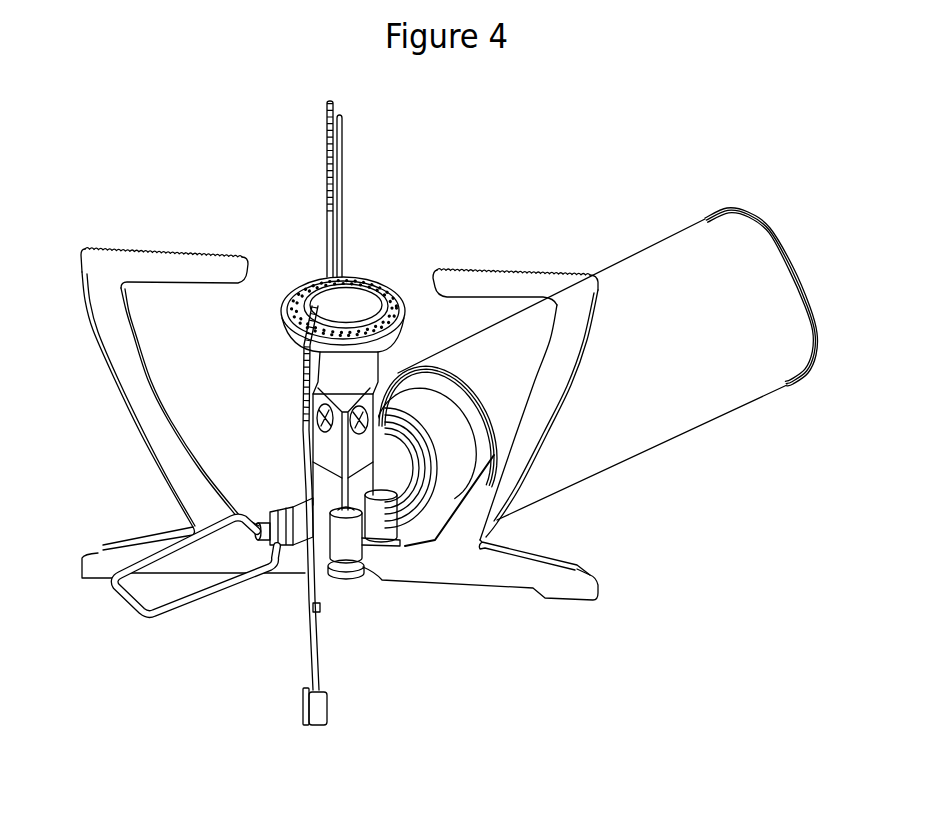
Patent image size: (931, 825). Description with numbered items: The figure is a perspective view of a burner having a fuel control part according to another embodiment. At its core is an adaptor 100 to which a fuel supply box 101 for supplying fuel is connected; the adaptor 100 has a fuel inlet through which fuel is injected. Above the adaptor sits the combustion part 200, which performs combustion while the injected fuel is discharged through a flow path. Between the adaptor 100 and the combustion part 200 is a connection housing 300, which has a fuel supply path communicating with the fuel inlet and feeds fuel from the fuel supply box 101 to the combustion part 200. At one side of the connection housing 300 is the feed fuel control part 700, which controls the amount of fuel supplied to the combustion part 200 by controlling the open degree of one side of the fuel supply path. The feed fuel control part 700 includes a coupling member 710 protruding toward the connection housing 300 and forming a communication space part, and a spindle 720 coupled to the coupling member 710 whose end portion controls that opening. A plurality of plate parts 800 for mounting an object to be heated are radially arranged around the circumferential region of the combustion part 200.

The adaptor 100 is at (424, 488).
The fuel supply box 101 is at (652, 307).
The combustion part 200 is at (379, 262).
The connection housing 300 is at (370, 500).
The feed fuel control part 700 is at (214, 615).
The coupling member 710 is at (298, 547).
The spindle 720 is at (243, 535).
The plate parts 800 is at (175, 238).